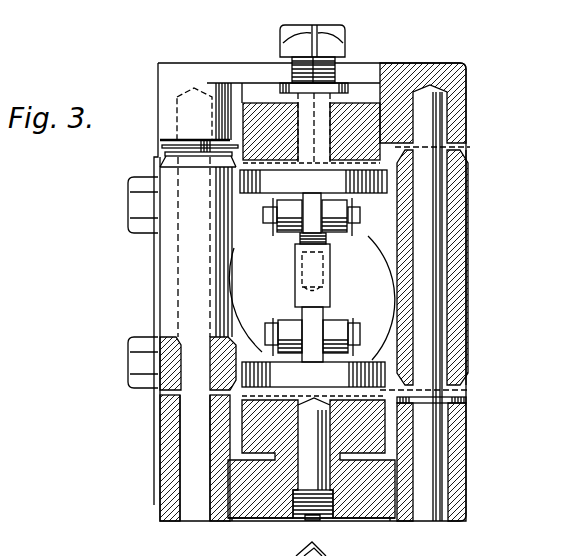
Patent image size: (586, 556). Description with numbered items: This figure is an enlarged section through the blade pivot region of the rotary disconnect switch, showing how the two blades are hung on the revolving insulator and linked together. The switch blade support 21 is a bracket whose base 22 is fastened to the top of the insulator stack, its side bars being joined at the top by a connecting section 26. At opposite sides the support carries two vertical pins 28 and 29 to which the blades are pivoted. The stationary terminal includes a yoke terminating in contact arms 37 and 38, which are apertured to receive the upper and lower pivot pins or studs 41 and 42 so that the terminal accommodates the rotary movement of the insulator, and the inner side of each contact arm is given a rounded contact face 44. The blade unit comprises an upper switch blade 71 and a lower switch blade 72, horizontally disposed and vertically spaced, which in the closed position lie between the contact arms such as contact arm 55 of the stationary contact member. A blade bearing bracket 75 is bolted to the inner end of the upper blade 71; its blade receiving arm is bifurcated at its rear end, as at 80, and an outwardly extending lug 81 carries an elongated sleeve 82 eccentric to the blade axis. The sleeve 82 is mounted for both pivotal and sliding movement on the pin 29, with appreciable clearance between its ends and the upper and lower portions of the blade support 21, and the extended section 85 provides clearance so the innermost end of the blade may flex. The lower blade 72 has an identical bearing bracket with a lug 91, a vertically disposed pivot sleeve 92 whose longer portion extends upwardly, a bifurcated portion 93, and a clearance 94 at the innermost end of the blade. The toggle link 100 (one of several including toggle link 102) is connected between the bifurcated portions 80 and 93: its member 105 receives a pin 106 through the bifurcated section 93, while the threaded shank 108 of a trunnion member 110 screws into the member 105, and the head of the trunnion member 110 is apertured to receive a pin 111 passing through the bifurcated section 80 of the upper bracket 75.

The switch blade support 21 is at (476, 476).
The base 22 is at (250, 507).
The connecting section 26 is at (362, 68).
The vertical pin 28 is at (185, 428).
The vertical pin 29 is at (438, 303).
The contact arm 37 is at (260, 110).
The contact arm 38 is at (377, 428).
The upper pivot pin 41 is at (288, 38).
The lower pivot pin 42 is at (325, 475).
The rounded contact face 44 is at (213, 378).
The contact arm 55 is at (108, 546).
The upper switch blade 71 is at (247, 180).
The lower switch blade 72 is at (215, 338).
The blade bearing bracket 75 is at (468, 220).
The bifurcated portion 80 is at (297, 235).
The lug 81 is at (380, 237).
The sleeve 82 is at (460, 248).
The extended section 85 is at (275, 196).
The lug 91 is at (247, 323).
The pivot sleeve 92 is at (162, 277).
The bifurcated portion 93 is at (327, 330).
The clearance 94 is at (357, 353).
The toggle link 100 is at (292, 275).
The toggle link 102 is at (307, 260).
The member 105 is at (327, 285).
The pin 106 is at (352, 333).
The threaded shank 108 is at (320, 242).
The trunnion member 110 is at (310, 200).
The pin 111 is at (352, 222).